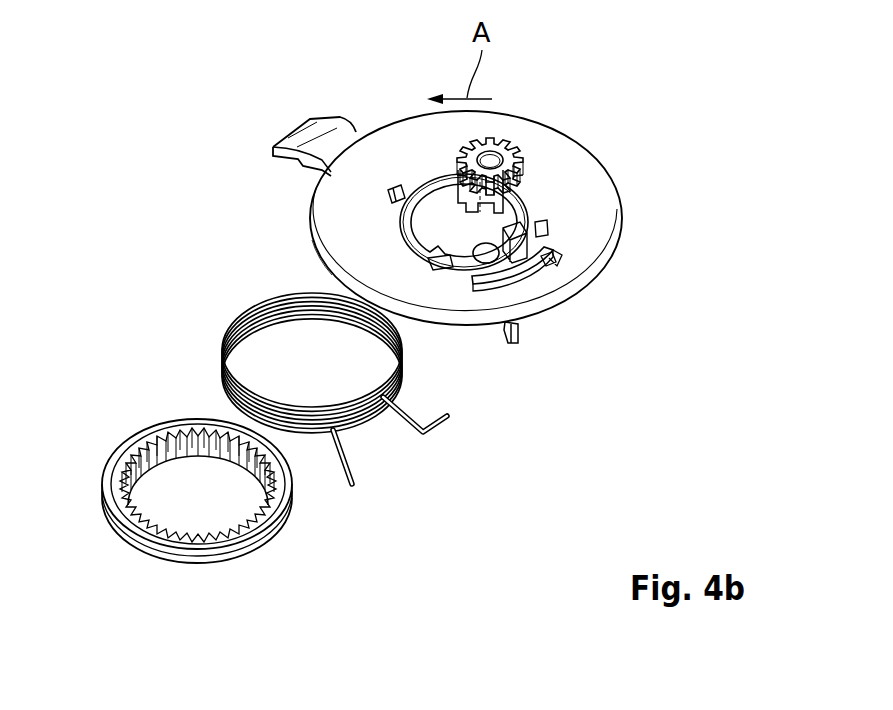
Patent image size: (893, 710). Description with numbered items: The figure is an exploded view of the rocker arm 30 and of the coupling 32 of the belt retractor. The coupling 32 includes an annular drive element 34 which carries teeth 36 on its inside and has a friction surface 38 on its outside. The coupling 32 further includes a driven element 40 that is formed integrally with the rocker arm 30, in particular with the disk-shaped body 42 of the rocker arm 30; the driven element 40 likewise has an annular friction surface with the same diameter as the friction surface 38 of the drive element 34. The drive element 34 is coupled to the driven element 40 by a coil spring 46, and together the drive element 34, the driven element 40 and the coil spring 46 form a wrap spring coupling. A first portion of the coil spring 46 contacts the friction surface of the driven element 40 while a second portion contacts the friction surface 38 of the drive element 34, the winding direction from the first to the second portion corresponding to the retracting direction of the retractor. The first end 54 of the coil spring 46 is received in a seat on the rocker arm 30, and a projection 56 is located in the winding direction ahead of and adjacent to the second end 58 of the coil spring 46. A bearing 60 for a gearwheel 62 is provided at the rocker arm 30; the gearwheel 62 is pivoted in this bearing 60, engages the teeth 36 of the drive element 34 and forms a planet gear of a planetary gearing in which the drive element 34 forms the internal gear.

The rocker arm 30 is at (454, 197).
The coupling 32 is at (368, 378).
The drive element 34 is at (202, 469).
The teeth 36 is at (156, 438).
The friction surface 38 is at (255, 530).
The driven element 40 is at (595, 210).
The disk-shaped body 42 is at (517, 203).
The coil spring 46 is at (244, 320).
The first end 54 is at (452, 415).
The projection 56 is at (514, 333).
The second end 58 is at (352, 470).
The bearing 60 is at (488, 257).
The gearwheel 62 is at (502, 138).